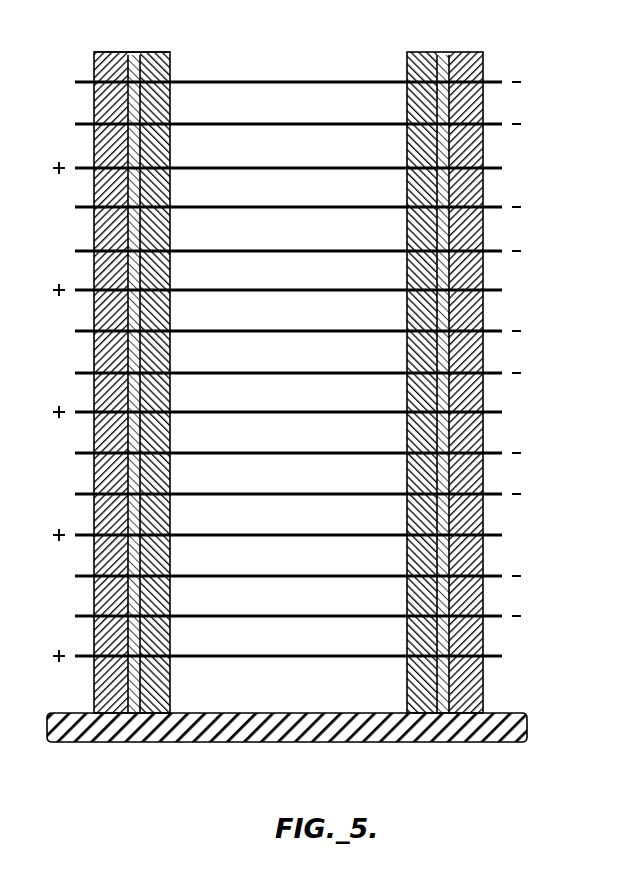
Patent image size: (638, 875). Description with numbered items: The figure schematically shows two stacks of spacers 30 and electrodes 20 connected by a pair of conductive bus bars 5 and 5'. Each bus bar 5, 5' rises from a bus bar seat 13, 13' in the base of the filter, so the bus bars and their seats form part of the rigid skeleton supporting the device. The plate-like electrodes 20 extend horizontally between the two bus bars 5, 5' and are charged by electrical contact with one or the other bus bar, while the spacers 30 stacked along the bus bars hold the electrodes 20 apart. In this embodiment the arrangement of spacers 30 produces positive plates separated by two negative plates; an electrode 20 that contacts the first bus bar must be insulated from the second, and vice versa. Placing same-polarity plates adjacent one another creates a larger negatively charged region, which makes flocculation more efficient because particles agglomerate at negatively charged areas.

The bus bar 5 is at (447, 366).
The bus bar 5' is at (136, 71).
The bus bar seat 13 is at (413, 748).
The bus bar seat 13' is at (173, 747).
The electrode 20 is at (243, 124).
The spacer 30 is at (94, 236).